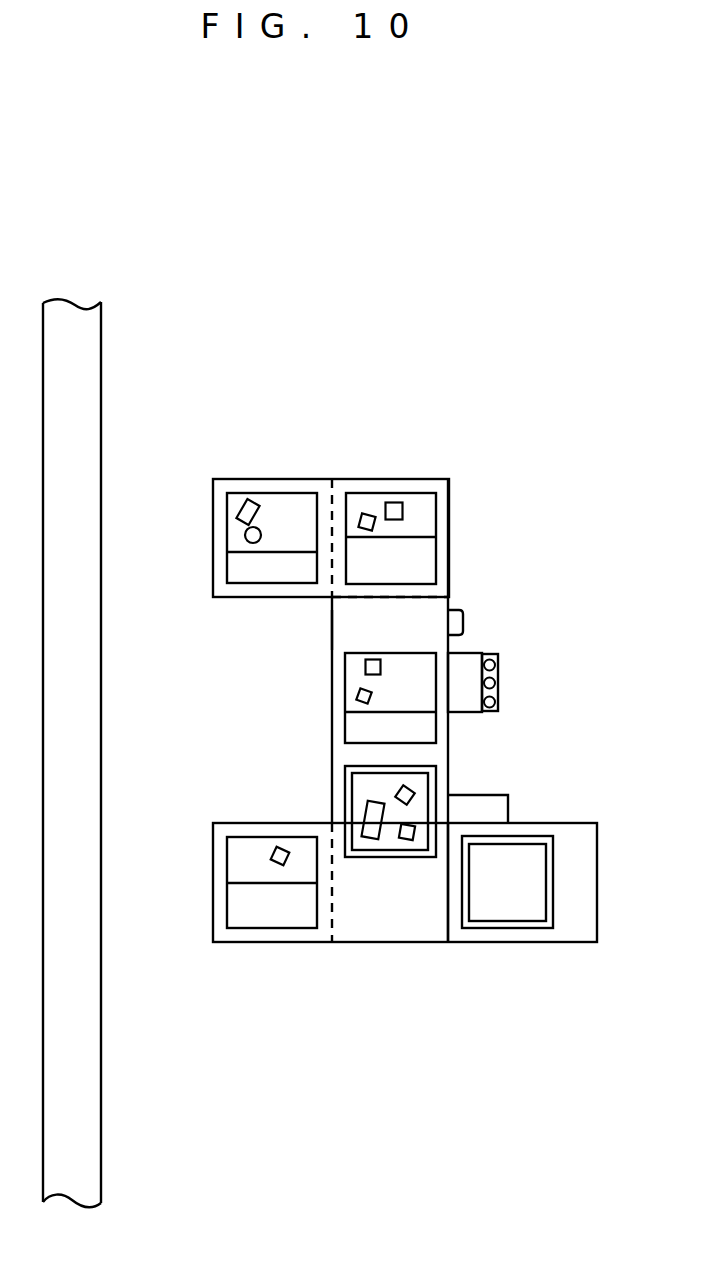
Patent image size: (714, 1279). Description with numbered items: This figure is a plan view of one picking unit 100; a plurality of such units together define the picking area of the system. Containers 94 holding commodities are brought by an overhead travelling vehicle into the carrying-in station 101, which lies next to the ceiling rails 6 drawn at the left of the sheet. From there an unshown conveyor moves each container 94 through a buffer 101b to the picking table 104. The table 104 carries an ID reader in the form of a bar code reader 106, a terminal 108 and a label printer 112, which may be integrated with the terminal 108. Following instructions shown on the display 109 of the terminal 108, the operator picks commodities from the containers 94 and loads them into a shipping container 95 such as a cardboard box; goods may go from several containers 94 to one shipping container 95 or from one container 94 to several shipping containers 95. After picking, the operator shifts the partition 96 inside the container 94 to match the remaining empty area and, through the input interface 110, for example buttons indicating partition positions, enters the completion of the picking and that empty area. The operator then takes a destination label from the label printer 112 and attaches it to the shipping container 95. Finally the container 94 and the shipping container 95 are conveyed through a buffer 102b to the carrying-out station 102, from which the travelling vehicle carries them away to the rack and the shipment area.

The ceiling rails 6 is at (97, 1081).
The container 94 is at (230, 538).
The shipping container 95 is at (362, 787).
The partition 96 is at (278, 548).
The picking unit 100 is at (456, 1070).
The carrying-in station 101 is at (265, 482).
The buffer 101b is at (450, 555).
The carrying-out station 102 is at (290, 937).
The buffer 102b is at (409, 922).
The picking table 104 is at (343, 625).
The bar code reader 106 is at (463, 608).
The terminal 108 is at (483, 716).
The display 109 is at (463, 663).
The input interface 110 is at (500, 690).
The label printer 112 is at (498, 805).